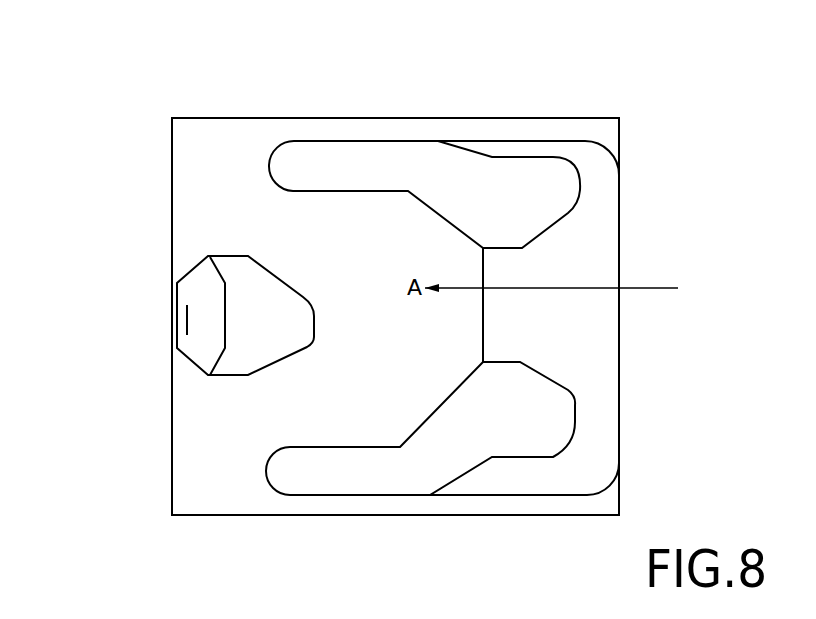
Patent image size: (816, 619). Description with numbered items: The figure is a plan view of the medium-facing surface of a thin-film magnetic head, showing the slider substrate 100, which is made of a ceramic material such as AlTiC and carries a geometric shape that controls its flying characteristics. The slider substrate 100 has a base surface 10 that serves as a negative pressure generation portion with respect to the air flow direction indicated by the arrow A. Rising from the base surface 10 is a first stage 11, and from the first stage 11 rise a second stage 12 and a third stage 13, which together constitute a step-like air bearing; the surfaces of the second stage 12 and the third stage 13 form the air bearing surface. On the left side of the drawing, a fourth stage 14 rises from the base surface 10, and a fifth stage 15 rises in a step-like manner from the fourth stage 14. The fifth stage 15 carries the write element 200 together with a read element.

The slider substrate 100 is at (252, 118).
The base surface 10 is at (300, 411).
The first stage 11 is at (583, 310).
The second stage 12 is at (405, 158).
The third stage 13 is at (412, 462).
The fourth stage 14 is at (263, 292).
The fifth stage 15 is at (209, 347).
The write element 200 is at (187, 325).